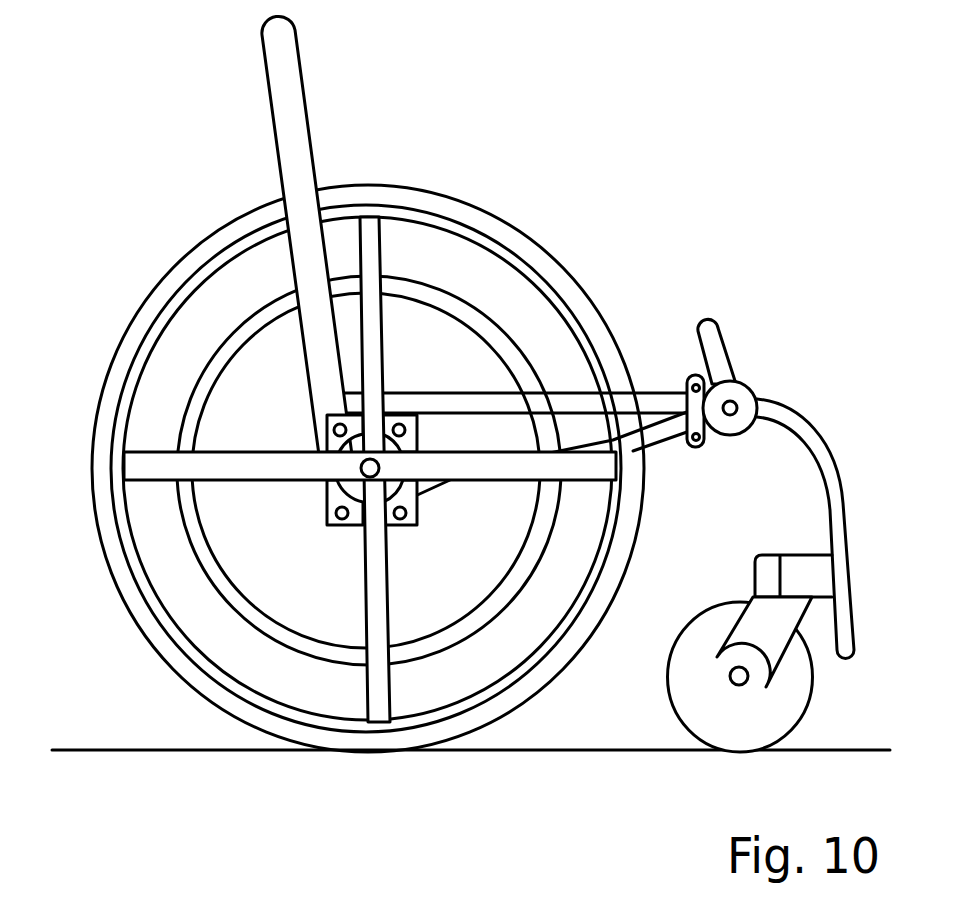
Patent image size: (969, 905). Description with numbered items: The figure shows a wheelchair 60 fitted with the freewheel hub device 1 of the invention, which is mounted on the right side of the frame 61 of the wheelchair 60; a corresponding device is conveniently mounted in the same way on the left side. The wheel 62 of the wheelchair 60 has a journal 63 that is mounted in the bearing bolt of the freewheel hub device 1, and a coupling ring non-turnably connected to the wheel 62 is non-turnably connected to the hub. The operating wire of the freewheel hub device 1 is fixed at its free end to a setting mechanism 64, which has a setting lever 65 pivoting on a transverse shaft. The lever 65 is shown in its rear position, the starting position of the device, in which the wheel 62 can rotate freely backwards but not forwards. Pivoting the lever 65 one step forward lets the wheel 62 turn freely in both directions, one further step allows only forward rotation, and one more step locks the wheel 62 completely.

The wheelchair 60 is at (353, 143).
The frame 61 is at (317, 442).
The wheel 62 is at (368, 468).
The journal 63 is at (362, 472).
The mounting plate 1 is at (415, 437).
The setting mechanism 64 is at (703, 430).
The setting lever 65 is at (720, 353).